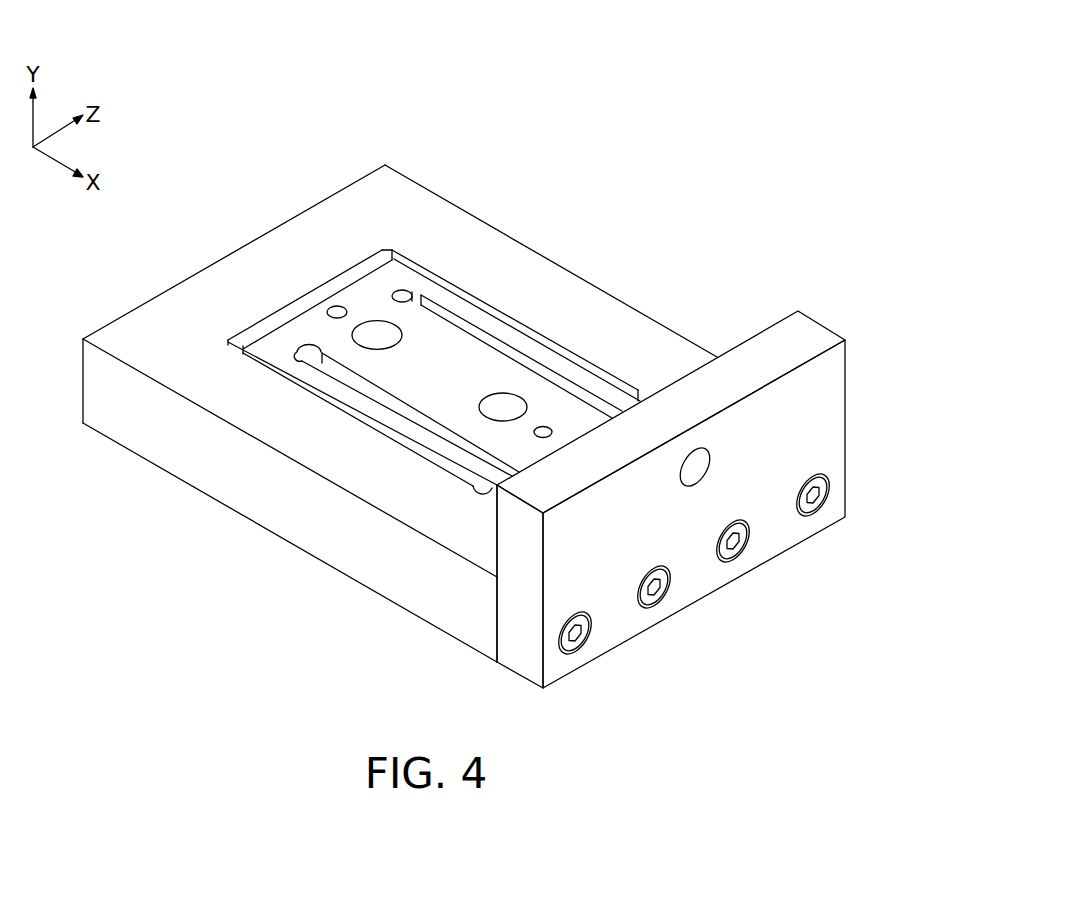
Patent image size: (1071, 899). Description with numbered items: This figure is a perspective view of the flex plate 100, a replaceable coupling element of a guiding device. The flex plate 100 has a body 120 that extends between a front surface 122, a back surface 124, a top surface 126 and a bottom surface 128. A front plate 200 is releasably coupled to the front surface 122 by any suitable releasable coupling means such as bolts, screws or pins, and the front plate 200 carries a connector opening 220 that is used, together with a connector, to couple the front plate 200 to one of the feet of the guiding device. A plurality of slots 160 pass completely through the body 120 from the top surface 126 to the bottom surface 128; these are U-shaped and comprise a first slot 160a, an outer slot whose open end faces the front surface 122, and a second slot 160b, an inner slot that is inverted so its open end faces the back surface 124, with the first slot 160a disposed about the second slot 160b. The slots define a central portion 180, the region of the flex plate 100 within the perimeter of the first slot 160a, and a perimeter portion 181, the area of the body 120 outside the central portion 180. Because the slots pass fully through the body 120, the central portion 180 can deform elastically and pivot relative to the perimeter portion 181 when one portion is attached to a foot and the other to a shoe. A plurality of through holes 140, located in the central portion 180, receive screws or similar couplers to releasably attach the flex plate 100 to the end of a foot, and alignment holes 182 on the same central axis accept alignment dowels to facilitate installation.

The flex plate 100 is at (445, 384).
The body 120 is at (358, 458).
The front surface 122 is at (290, 587).
The back surface 124 is at (41, 356).
The top surface 126 is at (400, 261).
The bottom surface 128 is at (290, 500).
The through holes 140 is at (522, 369).
The plurality of slots 160 is at (538, 339).
The first slot 160a is at (325, 418).
The second slot 160b is at (406, 430).
The central portion 180 is at (496, 313).
The perimeter portion 181 is at (184, 348).
The alignment holes 182 is at (321, 264).
The front plate 200 is at (693, 494).
The connector opening 220 is at (712, 428).